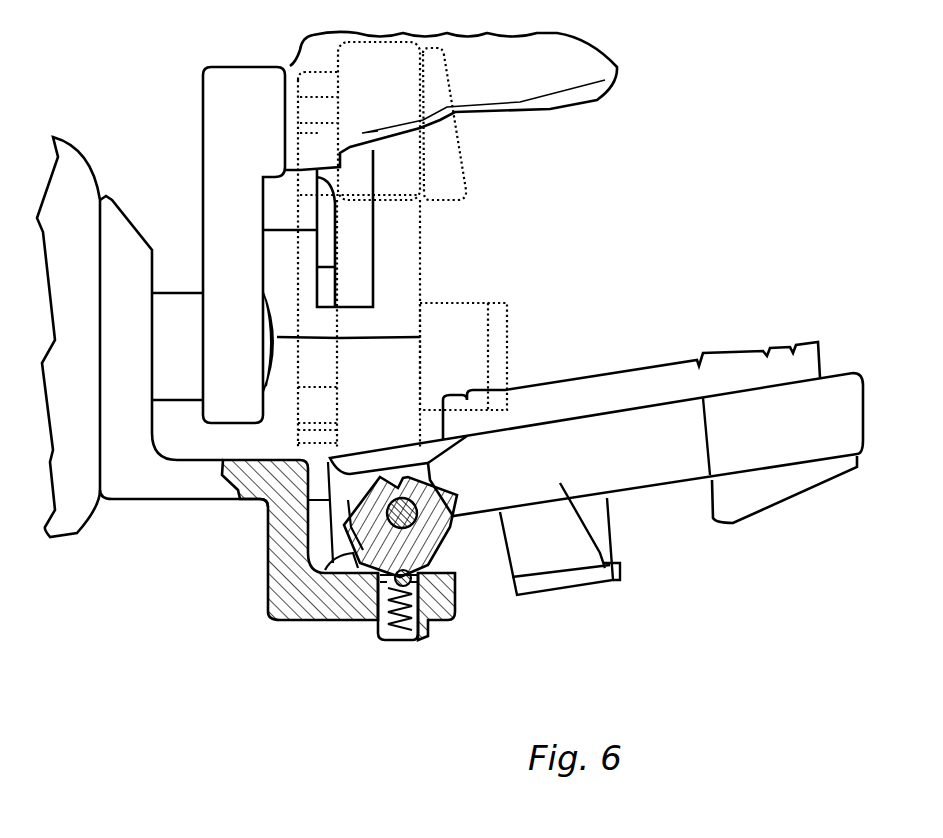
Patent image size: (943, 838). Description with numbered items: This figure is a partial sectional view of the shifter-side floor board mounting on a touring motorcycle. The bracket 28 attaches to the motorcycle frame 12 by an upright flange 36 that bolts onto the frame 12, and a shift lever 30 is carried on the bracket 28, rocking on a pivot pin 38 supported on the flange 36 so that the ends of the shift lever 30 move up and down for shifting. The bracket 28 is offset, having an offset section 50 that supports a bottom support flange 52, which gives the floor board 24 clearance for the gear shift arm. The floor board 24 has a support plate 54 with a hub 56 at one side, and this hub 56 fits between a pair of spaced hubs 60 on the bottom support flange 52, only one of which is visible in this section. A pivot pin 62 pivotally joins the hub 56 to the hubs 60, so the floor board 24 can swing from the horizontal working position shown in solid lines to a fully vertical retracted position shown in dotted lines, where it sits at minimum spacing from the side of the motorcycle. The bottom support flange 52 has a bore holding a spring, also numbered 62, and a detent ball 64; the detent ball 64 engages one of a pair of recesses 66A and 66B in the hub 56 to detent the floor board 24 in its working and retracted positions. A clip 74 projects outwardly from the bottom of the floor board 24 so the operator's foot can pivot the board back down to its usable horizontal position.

The frame 12 is at (77, 173).
The bracket 28 is at (122, 253).
The shift lever 30 is at (228, 85).
The upright flange 36 is at (133, 400).
The pivot pin 38 is at (420, 337).
The floor board 24 is at (410, 231).
The offset section 50 is at (268, 572).
The bottom support flange 52 is at (343, 613).
The support plate 54 is at (603, 563).
The hub 56 is at (440, 543).
The hubs 60 is at (317, 557).
The pivot pin 62 is at (430, 480).
The detent ball 64 is at (384, 640).
The recess 66A is at (455, 607).
The recess 66B is at (343, 532).
The clip 74 is at (620, 563).